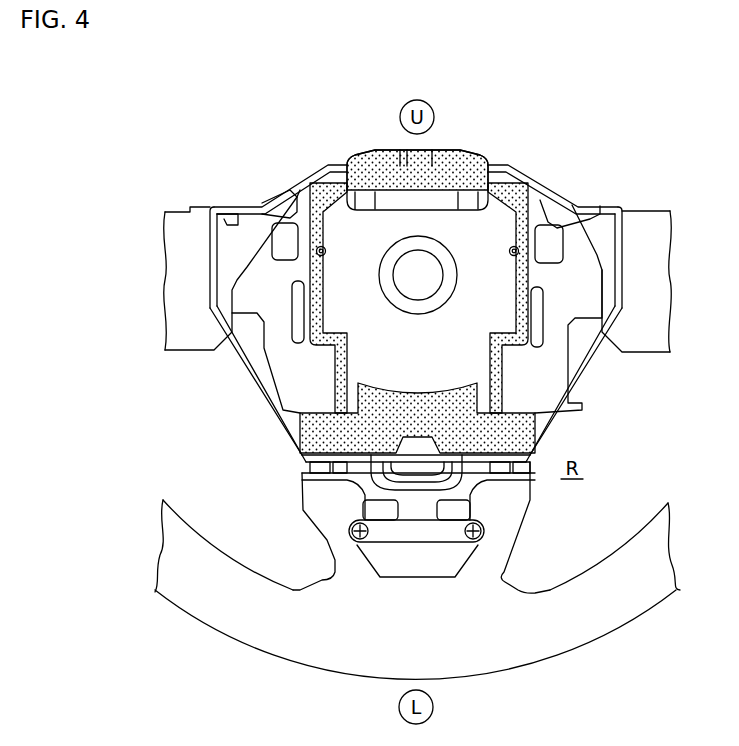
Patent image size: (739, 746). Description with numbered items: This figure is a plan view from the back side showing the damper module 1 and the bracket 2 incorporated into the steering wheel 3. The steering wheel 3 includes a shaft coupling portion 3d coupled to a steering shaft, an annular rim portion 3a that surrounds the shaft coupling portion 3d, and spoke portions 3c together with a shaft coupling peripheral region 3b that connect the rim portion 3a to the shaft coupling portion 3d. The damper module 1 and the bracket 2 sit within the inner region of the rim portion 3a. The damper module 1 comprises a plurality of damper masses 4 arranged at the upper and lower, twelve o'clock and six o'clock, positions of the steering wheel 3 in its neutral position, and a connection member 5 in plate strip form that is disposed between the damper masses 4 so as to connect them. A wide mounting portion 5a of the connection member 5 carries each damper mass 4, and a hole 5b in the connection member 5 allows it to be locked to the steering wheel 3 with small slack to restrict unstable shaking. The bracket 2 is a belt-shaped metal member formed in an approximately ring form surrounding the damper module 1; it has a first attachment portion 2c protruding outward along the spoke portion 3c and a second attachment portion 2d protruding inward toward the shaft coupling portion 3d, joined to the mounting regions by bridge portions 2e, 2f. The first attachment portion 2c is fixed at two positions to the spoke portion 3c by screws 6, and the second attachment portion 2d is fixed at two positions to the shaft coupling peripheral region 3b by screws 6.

The damper module 1 is at (322, 362).
The bracket 2 is at (436, 349).
The first attachment portion 2c is at (421, 540).
The second attachment portion 2d is at (478, 200).
The bridge portion 2e is at (600, 356).
The bridge portion 2f is at (278, 418).
The steering wheel 3 is at (394, 448).
The rim portion 3a is at (617, 617).
The shaft coupling peripheral region 3b is at (409, 275).
The spoke portion 3c is at (178, 331).
The shaft coupling portion 3d is at (380, 283).
The damper mass 4 is at (455, 150).
The connection member 5 is at (425, 313).
The mounting portion 5a is at (301, 448).
The hole 5b is at (418, 243).
The screw 6 is at (488, 529).